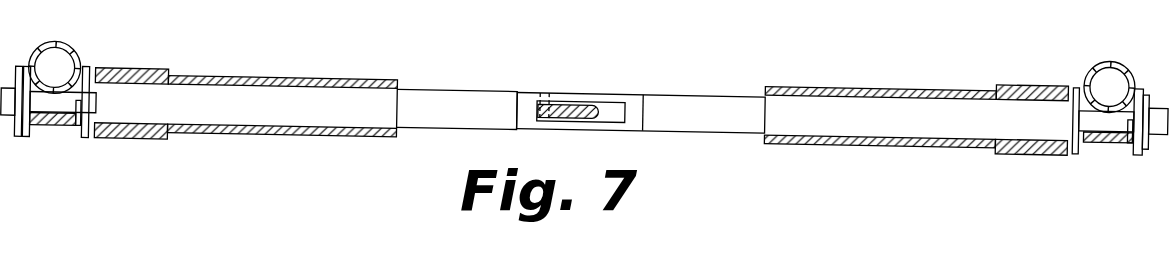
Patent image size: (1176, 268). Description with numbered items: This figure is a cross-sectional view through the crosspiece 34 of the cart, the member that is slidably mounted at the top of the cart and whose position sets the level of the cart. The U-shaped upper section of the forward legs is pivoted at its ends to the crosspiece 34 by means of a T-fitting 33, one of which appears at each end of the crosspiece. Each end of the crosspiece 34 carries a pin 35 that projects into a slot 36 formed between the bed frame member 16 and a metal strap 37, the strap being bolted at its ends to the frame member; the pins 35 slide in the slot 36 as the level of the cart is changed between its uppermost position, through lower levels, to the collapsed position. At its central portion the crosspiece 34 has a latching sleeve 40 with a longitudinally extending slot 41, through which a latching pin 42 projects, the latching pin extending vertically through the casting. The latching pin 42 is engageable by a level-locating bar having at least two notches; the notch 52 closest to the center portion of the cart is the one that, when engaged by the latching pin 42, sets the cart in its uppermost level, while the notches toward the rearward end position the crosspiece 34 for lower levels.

The bed frame member 16 is at (72, 60).
The T-fitting 33 is at (137, 136).
The crosspiece 34 is at (467, 90).
The pin 35 is at (72, 100).
The slot 36 is at (43, 113).
The metal strap 37 is at (69, 116).
The latching sleeve 40 is at (640, 92).
The longitudinally extending slot 41 is at (613, 107).
The latching pin 42 is at (541, 86).
The notch 52 is at (572, 96).